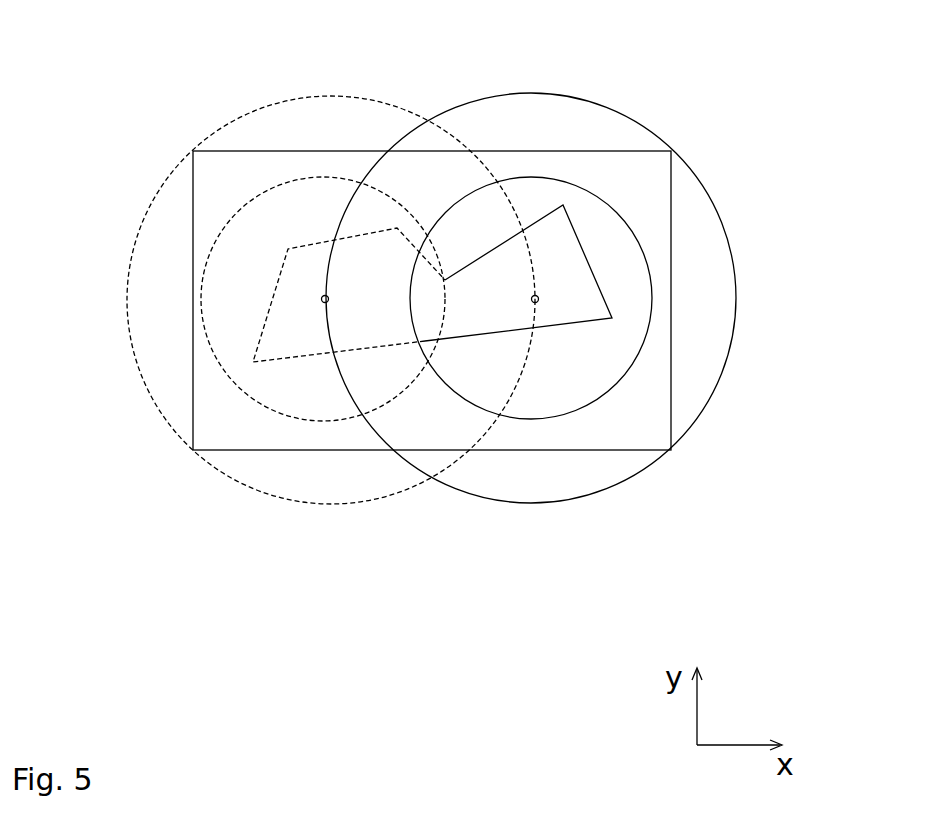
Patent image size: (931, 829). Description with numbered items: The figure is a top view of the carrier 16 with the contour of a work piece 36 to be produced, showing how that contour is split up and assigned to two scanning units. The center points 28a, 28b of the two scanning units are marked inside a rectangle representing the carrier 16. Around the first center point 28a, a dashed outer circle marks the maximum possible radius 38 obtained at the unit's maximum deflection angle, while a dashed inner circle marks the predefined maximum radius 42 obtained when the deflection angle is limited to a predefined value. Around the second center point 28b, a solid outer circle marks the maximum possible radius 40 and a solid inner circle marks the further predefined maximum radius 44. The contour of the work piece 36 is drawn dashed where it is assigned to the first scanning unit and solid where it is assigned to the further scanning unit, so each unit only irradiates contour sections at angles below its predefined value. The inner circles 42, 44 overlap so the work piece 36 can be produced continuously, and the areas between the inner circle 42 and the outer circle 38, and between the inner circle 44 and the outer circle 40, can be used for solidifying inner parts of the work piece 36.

The carrier 16 is at (633, 173).
The center point 28a is at (325, 299).
The center point 28b is at (535, 299).
The work piece 36 is at (363, 333).
The maximum possible radius 38 is at (145, 385).
The maximum possible radius 40 is at (702, 415).
The predefined maximum radius 42 is at (257, 400).
The further predefined maximum radius 44 is at (575, 413).